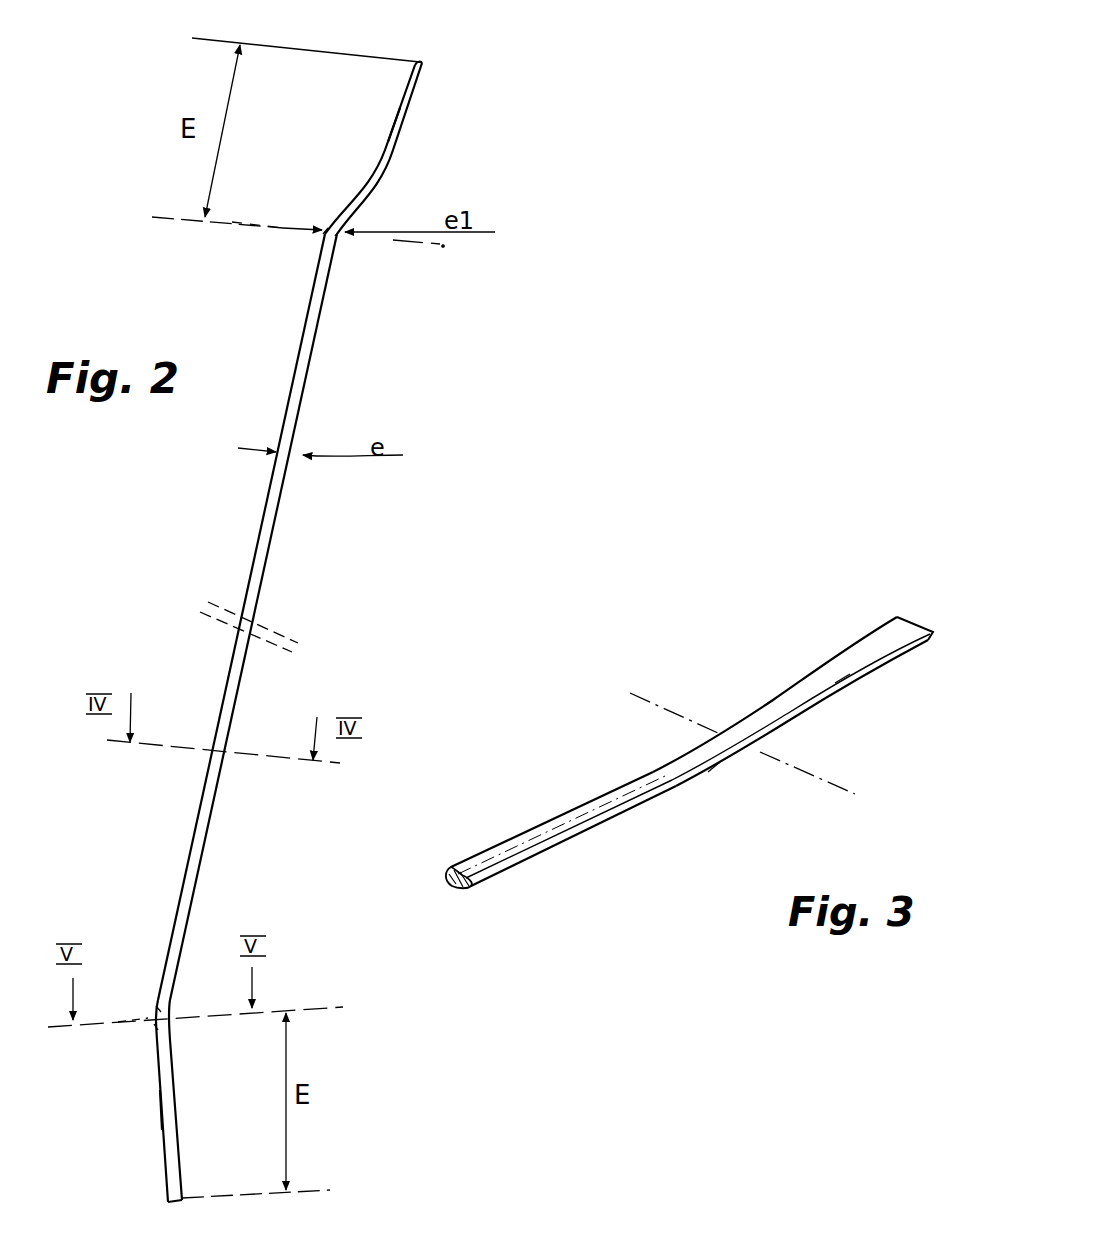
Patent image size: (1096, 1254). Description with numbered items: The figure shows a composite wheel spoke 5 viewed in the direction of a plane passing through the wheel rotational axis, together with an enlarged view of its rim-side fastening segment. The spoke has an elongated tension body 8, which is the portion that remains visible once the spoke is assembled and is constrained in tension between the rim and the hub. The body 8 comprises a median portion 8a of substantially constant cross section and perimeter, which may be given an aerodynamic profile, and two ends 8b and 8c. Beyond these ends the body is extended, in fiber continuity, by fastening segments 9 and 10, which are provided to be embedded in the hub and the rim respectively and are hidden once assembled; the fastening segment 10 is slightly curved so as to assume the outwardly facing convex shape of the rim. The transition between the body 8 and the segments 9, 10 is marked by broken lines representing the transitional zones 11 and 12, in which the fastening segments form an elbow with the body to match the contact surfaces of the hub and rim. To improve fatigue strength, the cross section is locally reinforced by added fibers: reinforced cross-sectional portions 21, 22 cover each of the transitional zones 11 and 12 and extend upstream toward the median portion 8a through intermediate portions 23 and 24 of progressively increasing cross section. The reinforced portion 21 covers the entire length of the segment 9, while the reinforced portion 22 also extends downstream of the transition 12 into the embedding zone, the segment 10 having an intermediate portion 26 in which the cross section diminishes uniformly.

In FIG. 2, the spoke 5 is at (213, 500).
In FIG. 3, the spoke 5 is at (474, 830).
In FIG. 2, the elongated tension body 8 is at (230, 653).
In FIG. 2, the median portion 8a is at (261, 528).
In FIG. 2, the end of the body 8b is at (338, 272).
In FIG. 3, the end of the body 8b is at (652, 770).
In FIG. 2, the end of the body 8c is at (176, 990).
In FIG. 2, the fastening segment 9 is at (181, 1142).
In FIG. 2, the fastening segment 10 is at (403, 143).
In FIG. 3, the fastening segment 10 is at (853, 630).
In FIG. 2, the transitional zone 11 is at (118, 1020).
In FIG. 2, the transitional zone 12 is at (232, 222).
In FIG. 3, the transitional zone 12 is at (676, 708).
In FIG. 2, the reinforced cross-sectional portion 21 is at (153, 1029).
In FIG. 2, the reinforced cross-sectional portion 22 is at (350, 250).
In FIG. 3, the reinforced cross-sectional portion 22 is at (753, 762).
In FIG. 2, the intermediate portion 23 is at (159, 1007).
In FIG. 2, the intermediate portion 24 is at (326, 236).
In FIG. 3, the intermediate portion 24 is at (715, 763).
In FIG. 2, the intermediate portion 26 is at (378, 160).
In FIG. 3, the intermediate portion 26 is at (841, 680).